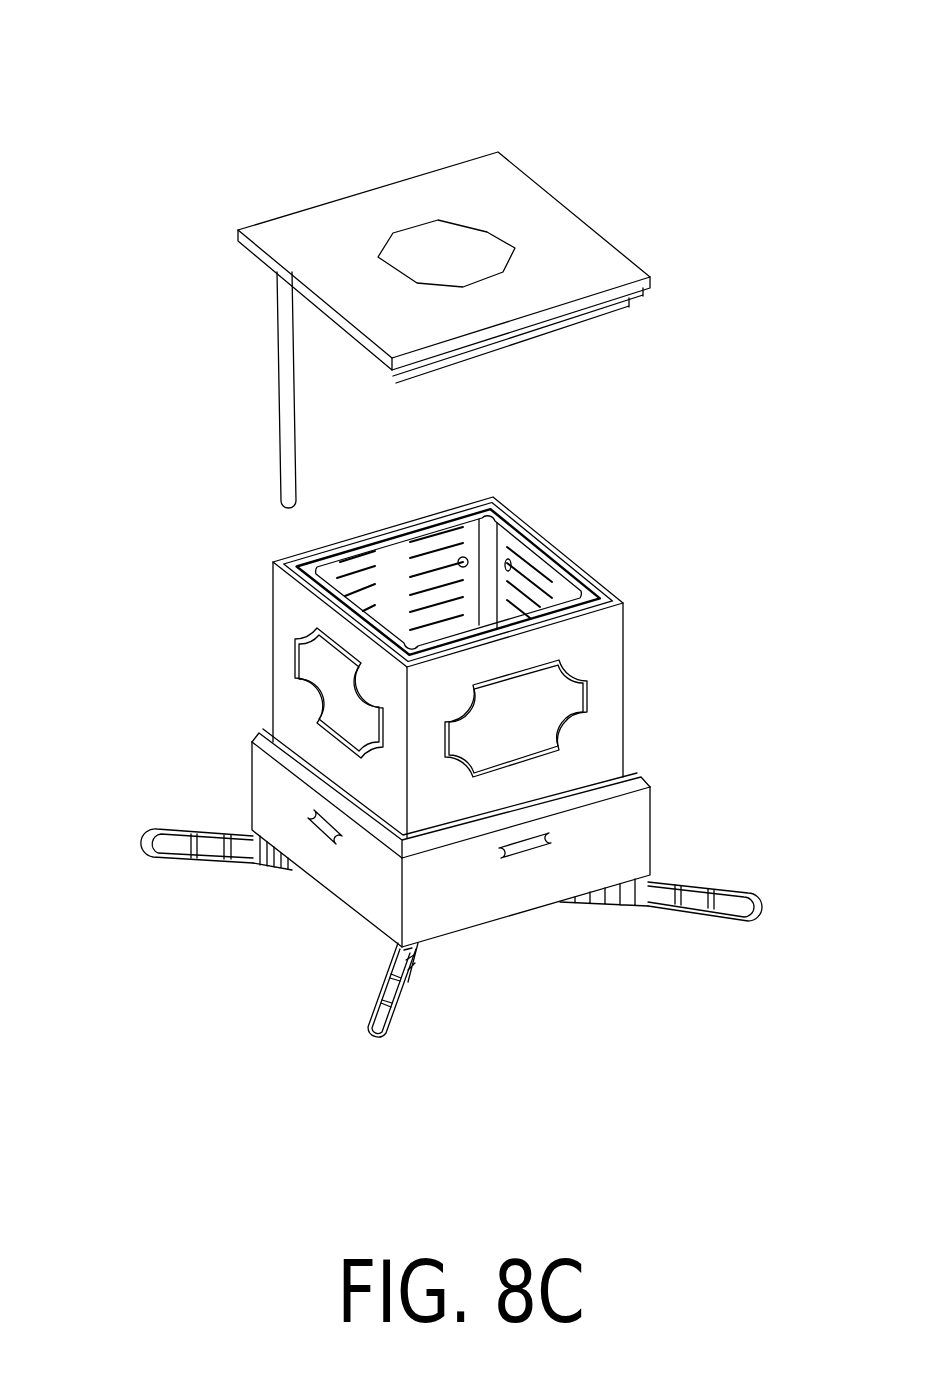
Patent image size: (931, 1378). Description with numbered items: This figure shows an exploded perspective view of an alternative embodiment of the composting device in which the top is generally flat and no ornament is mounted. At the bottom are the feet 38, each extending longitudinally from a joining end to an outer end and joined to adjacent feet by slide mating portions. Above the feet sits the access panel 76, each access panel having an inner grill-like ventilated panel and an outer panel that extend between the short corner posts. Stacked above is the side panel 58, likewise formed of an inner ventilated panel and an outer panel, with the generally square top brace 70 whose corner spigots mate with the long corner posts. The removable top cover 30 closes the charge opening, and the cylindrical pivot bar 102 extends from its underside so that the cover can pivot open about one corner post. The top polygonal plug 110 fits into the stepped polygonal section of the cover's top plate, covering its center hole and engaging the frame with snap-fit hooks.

The removable top cover 30 is at (545, 240).
The top polygonal plug 110 is at (455, 257).
The cylindrical pivot bar 102 is at (277, 392).
The top brace 70 is at (552, 540).
The side panel 58 is at (595, 660).
The access panel 76 is at (620, 842).
The foot 38 is at (380, 983).